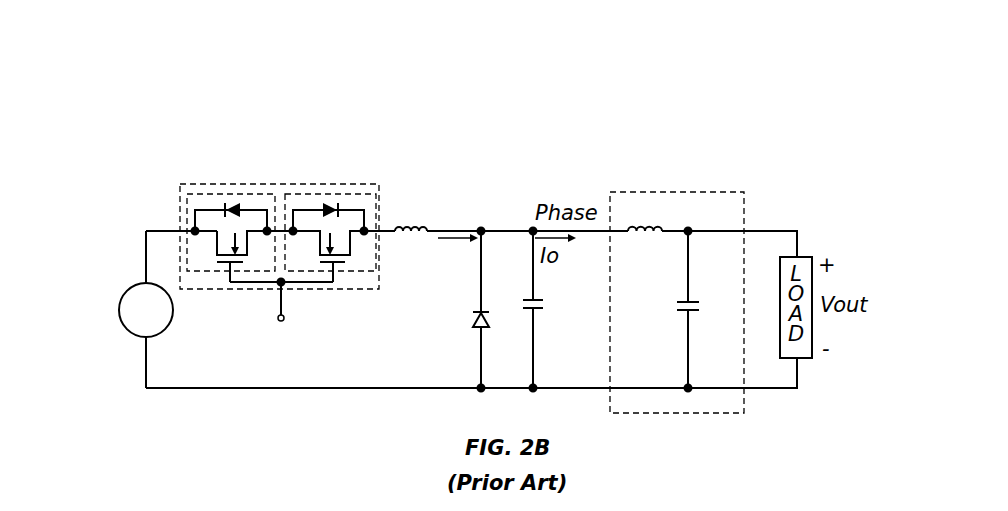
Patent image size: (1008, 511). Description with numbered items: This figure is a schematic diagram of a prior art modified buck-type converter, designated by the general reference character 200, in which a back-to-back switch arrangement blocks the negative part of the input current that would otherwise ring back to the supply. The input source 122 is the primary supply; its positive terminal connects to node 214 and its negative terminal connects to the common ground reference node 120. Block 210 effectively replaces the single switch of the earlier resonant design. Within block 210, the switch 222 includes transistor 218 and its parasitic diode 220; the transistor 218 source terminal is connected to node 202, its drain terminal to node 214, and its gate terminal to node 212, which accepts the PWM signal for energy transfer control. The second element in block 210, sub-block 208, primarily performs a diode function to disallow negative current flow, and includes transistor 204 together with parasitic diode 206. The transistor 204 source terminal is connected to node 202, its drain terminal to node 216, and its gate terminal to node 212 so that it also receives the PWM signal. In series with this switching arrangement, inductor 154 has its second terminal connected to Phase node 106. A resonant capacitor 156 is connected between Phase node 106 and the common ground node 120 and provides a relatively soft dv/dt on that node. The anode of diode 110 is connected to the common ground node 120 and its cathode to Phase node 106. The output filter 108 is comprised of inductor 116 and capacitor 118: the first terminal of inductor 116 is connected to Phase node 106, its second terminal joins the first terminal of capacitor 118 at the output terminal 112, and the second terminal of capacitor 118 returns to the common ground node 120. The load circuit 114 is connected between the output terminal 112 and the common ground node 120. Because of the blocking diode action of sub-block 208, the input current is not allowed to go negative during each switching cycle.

The buck-type converter 200 is at (740, 96).
The node 202 is at (282, 230).
The transistor 204 is at (352, 246).
The parasitic diode 206 is at (337, 205).
The sub-block 208 is at (306, 192).
The block 210 is at (260, 290).
The node 212 is at (283, 321).
The node 214 is at (150, 230).
The node 216 is at (385, 229).
The transistor 218 is at (217, 233).
The parasitic diode 220 is at (232, 203).
The switch 222 is at (180, 186).
The Phase node 106 is at (482, 229).
The output filter 108 is at (712, 192).
The diode 110 is at (475, 320).
The output terminal 112 is at (797, 230).
The load circuit 114 is at (812, 325).
The inductor 116 is at (645, 233).
The capacitor 118 is at (686, 311).
The common ground reference node 120 is at (256, 390).
The input source 122 is at (158, 334).
The inductor 154 is at (396, 233).
The resonant capacitor 156 is at (537, 310).